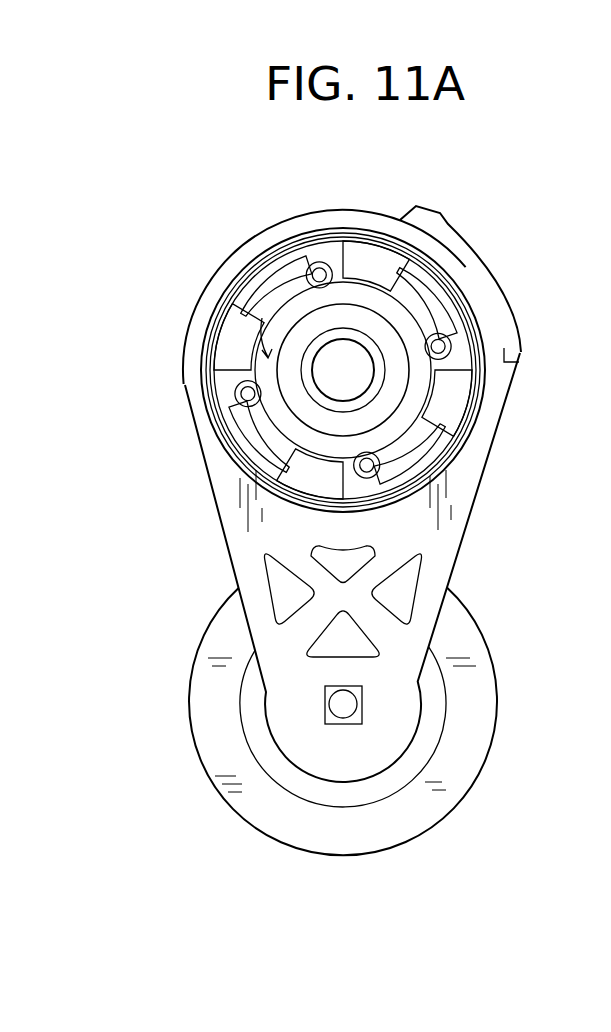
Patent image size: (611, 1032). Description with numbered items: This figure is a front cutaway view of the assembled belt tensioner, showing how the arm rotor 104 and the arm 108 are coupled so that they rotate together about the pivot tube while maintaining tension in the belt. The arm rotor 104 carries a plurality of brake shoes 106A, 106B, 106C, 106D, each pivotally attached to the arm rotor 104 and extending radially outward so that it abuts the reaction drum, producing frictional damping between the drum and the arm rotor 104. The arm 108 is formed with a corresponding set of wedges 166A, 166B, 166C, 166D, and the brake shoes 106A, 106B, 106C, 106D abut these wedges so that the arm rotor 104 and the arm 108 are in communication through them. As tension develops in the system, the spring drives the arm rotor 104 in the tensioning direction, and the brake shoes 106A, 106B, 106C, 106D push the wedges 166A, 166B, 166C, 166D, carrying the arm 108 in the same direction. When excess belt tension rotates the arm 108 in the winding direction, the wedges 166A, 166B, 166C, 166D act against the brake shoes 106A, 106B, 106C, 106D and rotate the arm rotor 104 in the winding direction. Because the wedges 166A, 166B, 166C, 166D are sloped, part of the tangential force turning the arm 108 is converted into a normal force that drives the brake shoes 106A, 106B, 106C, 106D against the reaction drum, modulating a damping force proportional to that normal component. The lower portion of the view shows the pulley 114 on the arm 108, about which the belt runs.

The arm rotor 104 is at (330, 296).
The brake shoe 106A is at (288, 432).
The brake shoe 106B is at (262, 281).
The brake shoe 106C is at (423, 290).
The brake shoe 106D is at (418, 462).
The arm 108 is at (212, 490).
The pulley 114 is at (447, 818).
The wedge 166A is at (305, 500).
The wedge 166B is at (230, 340).
The wedge 166C is at (362, 256).
The wedge 166D is at (432, 423).